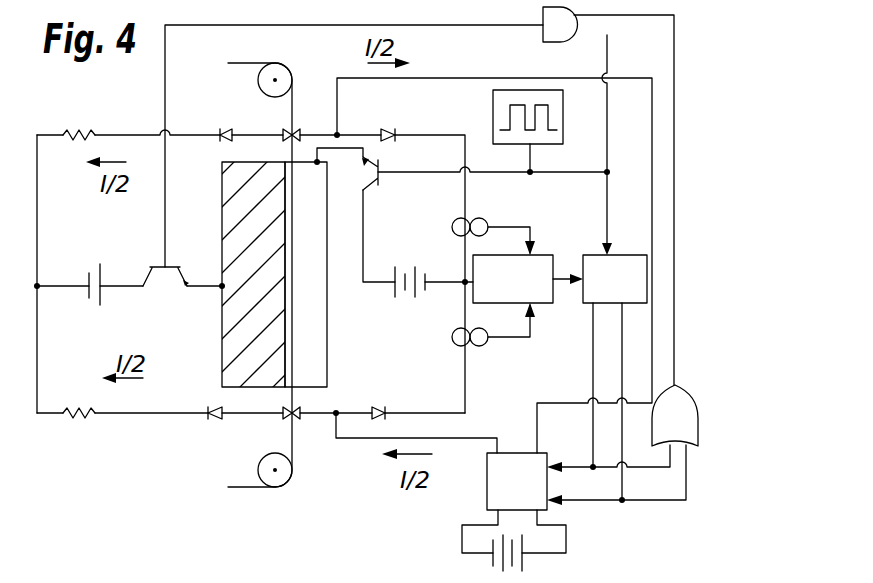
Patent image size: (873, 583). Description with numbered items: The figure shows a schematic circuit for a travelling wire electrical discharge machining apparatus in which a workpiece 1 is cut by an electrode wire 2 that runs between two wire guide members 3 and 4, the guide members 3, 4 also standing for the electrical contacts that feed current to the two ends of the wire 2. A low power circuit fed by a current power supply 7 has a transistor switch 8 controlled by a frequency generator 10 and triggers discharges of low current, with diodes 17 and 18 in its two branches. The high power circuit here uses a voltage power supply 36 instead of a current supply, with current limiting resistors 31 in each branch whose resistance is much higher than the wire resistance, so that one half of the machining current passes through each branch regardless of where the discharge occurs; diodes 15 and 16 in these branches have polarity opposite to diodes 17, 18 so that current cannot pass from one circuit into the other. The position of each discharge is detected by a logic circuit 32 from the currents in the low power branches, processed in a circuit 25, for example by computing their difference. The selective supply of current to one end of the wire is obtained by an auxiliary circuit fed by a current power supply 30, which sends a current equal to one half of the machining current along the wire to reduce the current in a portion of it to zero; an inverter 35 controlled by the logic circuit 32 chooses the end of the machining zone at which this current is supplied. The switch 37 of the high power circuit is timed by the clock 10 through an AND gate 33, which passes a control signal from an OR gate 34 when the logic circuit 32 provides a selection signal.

The workpiece 1 is at (262, 324).
The electrode wire 2 is at (292, 267).
The wire guide member 3 is at (288, 130).
The wire guide member 4 is at (283, 418).
The current power supply 7 is at (412, 292).
The transistor switch 8 is at (385, 186).
The frequency generator 10 is at (560, 140).
The diode 15 is at (231, 128).
The diode 16 is at (215, 425).
The diode 17 is at (390, 130).
The diode 18 is at (380, 406).
The processing circuit 25 is at (538, 290).
The current power supply 30 is at (527, 558).
The current limiting resistor 31 is at (85, 132).
The logic circuit 32 is at (592, 262).
The AND gate 33 is at (563, 28).
The OR gate 34 is at (697, 407).
The inverter 35 is at (495, 488).
The voltage power supply 36 is at (89, 300).
The switch 37 is at (157, 266).